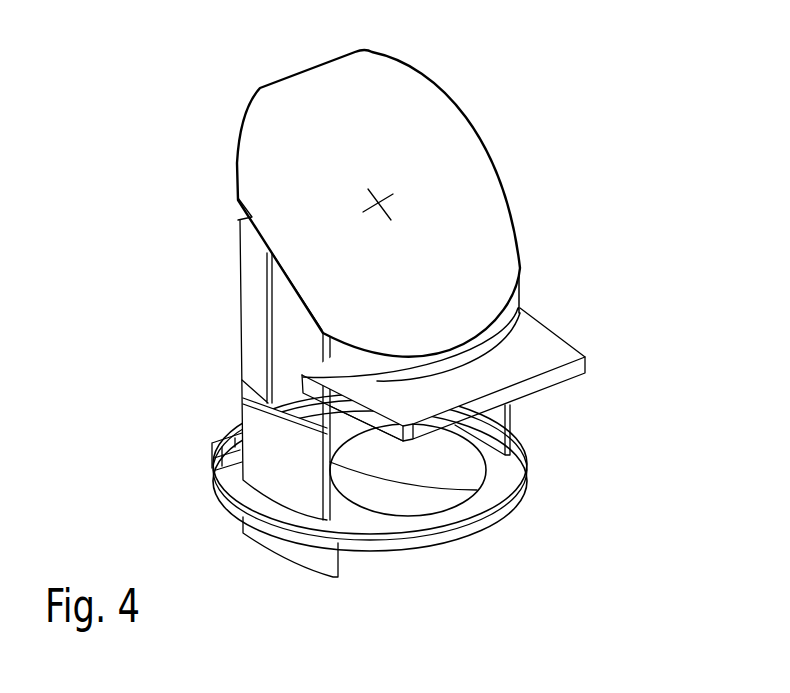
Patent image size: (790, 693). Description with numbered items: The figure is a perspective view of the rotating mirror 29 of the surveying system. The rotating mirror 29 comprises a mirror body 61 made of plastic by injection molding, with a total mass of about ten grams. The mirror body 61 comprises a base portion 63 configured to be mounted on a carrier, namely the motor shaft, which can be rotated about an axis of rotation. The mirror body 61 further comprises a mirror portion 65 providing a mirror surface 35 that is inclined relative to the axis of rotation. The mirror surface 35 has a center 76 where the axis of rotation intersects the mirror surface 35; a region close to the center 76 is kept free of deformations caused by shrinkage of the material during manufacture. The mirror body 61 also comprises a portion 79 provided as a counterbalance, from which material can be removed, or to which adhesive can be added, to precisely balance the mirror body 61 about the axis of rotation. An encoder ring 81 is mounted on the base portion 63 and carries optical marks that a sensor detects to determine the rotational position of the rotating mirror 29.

The rotating mirror 29 is at (397, 183).
The mirror surface 35 is at (420, 317).
The mirror body 61 is at (447, 398).
The base portion 63 is at (510, 430).
The mirror portion 65 is at (487, 148).
The center 76 is at (382, 190).
The counterbalance 79 is at (588, 364).
The encoder ring 81 is at (515, 510).